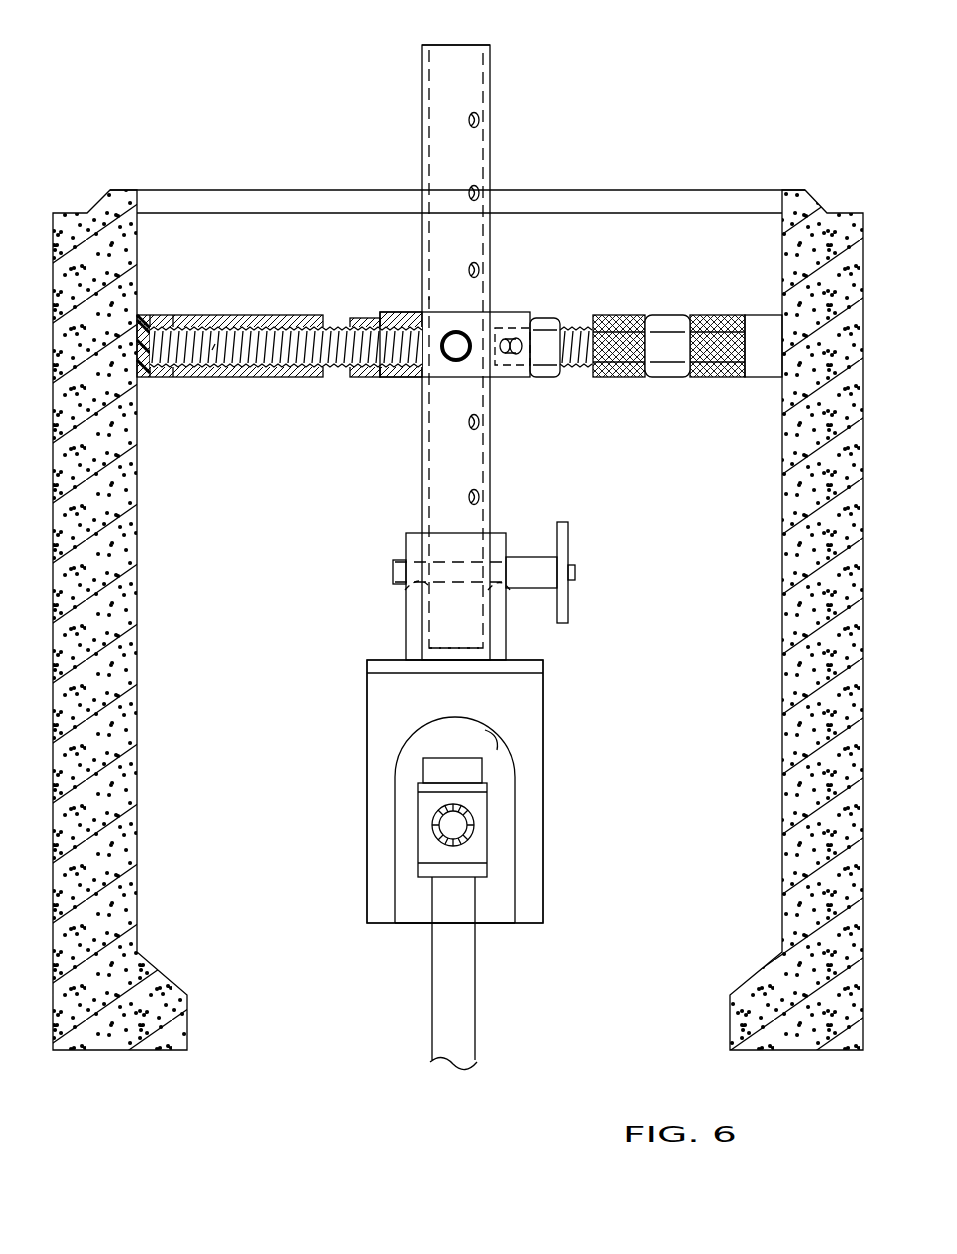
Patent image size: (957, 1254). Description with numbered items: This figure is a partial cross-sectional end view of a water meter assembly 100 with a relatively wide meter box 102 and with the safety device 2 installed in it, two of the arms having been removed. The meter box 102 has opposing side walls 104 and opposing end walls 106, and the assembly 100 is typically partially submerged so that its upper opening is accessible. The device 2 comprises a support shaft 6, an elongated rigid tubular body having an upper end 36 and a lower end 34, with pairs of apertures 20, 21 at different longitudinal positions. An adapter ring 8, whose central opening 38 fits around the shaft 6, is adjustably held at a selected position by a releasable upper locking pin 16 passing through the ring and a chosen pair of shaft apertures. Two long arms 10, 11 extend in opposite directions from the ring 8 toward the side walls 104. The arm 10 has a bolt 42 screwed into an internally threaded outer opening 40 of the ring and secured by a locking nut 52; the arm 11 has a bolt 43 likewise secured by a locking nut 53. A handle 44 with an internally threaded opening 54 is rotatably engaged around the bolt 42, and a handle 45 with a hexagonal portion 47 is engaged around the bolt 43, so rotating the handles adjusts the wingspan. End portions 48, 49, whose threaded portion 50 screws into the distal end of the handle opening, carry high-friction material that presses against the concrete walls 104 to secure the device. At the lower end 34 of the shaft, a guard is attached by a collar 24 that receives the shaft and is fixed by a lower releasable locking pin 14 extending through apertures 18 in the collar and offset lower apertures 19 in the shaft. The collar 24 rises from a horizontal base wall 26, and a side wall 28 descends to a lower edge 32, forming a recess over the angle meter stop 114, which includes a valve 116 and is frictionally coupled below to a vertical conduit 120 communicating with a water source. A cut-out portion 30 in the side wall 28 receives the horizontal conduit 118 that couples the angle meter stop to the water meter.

The water meter assembly 100 is at (166, 150).
The meter box 102 is at (235, 190).
The side walls 104 is at (137, 232).
The end walls 106 is at (238, 558).
The safety device 2 is at (393, 160).
The support shaft 6 is at (475, 78).
The upper end 36 is at (463, 45).
The aperture 20 is at (480, 124).
The aperture 21 is at (478, 192).
The adapter ring 8 is at (465, 318).
The central opening 38 is at (430, 298).
The long arm 10 is at (272, 300).
The long arm 11 is at (651, 300).
The bolt 42 is at (340, 326).
The bolt 43 is at (580, 328).
The handle 44 is at (275, 378).
The end portion 48 is at (165, 380).
The threaded portion 50 is at (185, 375).
The internally threaded opening 54 is at (212, 350).
The locking nut 52 is at (355, 380).
The outer opening 40 is at (393, 368).
The upper locking pin 16 is at (515, 352).
The locking nut 53 is at (540, 378).
The handle 45 is at (622, 378).
The polygonal portion 47 is at (665, 373).
The end portion 49 is at (762, 375).
The collar 24 is at (406, 540).
The apertures 18 is at (500, 565).
The lower apertures 19 is at (420, 585).
The lower releasable locking pin 14 is at (565, 538).
The base wall 26 is at (525, 660).
The lower end 34 is at (458, 650).
The side wall 28 is at (378, 718).
The cut-out portion 30 is at (510, 745).
The valve 116 is at (468, 772).
The horizontal conduit 118 is at (432, 830).
The angle meter stop 114 is at (478, 852).
The lower edge 32 is at (495, 923).
The vertical conduit 120 is at (432, 995).